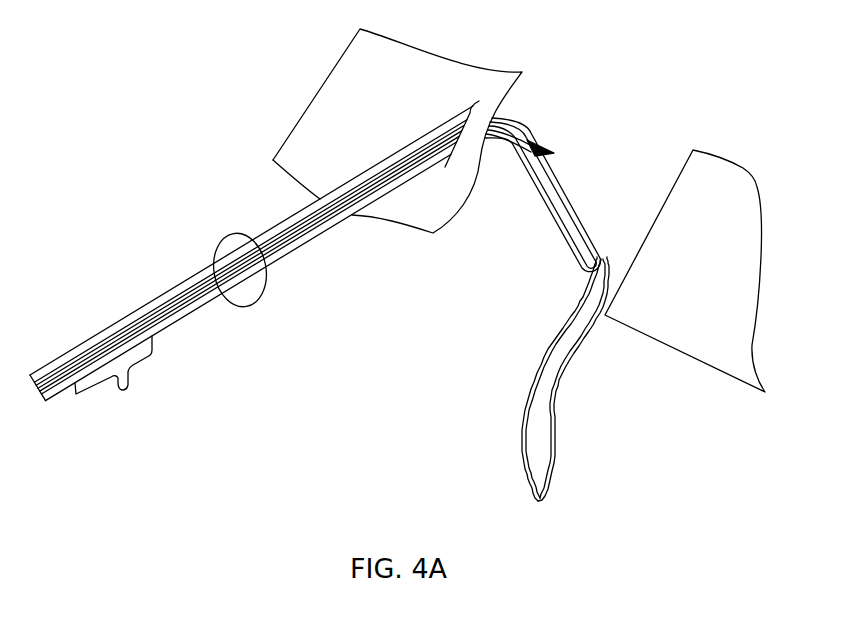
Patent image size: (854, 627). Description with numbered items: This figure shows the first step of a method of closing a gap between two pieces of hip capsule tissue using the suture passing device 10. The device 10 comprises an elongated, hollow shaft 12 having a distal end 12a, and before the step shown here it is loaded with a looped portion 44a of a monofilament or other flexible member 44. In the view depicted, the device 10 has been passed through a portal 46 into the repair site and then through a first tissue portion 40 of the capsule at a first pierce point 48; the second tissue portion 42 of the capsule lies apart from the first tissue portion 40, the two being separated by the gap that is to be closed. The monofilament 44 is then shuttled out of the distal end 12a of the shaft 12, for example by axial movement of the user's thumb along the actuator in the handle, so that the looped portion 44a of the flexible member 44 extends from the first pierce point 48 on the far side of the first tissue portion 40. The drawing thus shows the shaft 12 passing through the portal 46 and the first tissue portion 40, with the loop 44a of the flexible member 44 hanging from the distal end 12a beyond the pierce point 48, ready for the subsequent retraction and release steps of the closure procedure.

The suture passing device 10 is at (103, 205).
The shaft 12 is at (367, 172).
The distal end 12a is at (562, 187).
The first tissue portion 40 is at (367, 90).
The second tissue portion 42 is at (707, 287).
The flexible member 44 is at (525, 397).
The looped portion 44a is at (558, 466).
The portal 46 is at (220, 237).
The first pierce point 48 is at (473, 110).